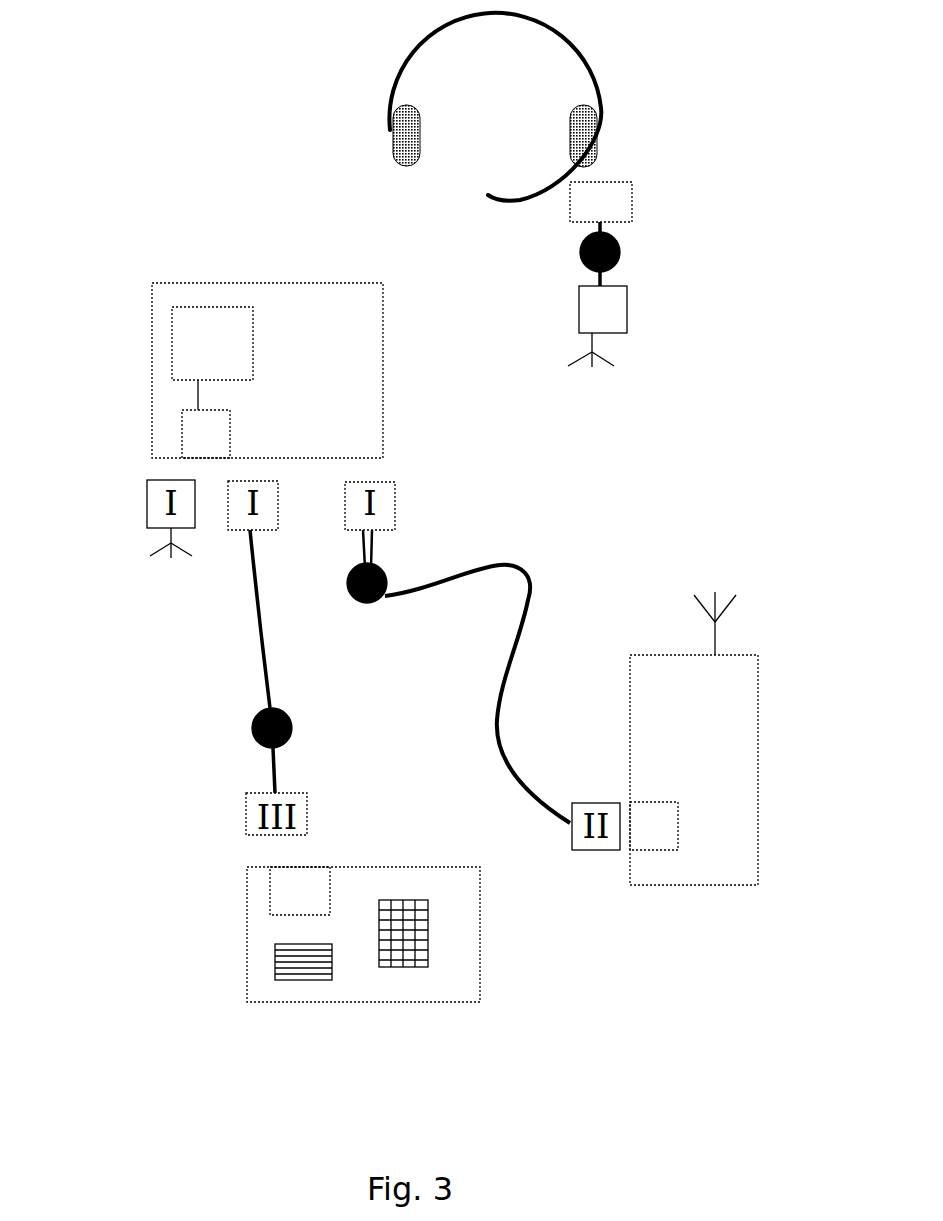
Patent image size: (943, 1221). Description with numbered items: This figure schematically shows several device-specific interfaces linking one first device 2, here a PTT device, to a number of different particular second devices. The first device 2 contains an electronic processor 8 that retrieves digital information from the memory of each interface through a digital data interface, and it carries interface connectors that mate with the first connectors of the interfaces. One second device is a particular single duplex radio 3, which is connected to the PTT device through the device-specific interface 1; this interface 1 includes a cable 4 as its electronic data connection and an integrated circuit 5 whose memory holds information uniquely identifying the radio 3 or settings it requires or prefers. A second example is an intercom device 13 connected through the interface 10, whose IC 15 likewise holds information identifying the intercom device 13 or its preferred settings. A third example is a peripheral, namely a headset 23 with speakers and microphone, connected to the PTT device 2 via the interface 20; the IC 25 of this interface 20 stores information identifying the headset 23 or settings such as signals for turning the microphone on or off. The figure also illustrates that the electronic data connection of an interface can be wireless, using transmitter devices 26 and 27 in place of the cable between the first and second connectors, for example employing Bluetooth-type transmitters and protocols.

The device-specific interface 1 is at (443, 668).
The first device 2 is at (260, 330).
The single duplex radio 3 is at (677, 885).
The cable 4 is at (505, 675).
The integrated circuit 5 is at (345, 583).
The electronic processor 8 is at (212, 343).
The device-specific interface 10 is at (297, 661).
The intercom device 13 is at (373, 867).
The integrated circuit 15 is at (293, 732).
The device-specific interface 20 is at (606, 234).
The headset 23 is at (600, 77).
The integrated circuit 25 is at (580, 252).
The transmitter device 26 is at (597, 326).
The transmitter device 27 is at (157, 540).